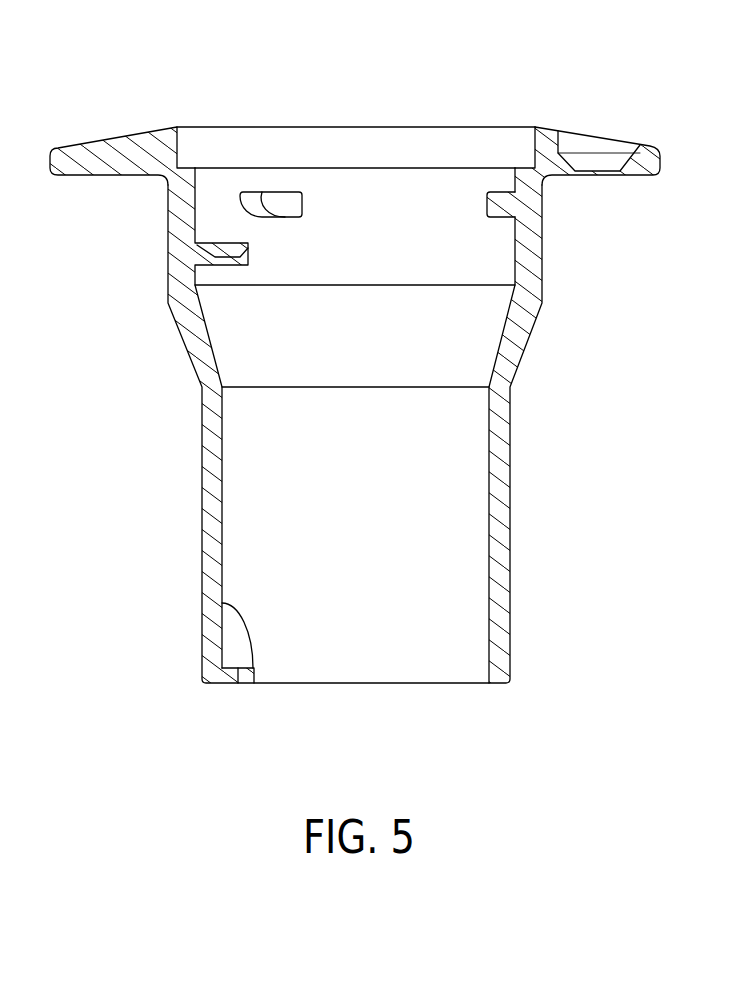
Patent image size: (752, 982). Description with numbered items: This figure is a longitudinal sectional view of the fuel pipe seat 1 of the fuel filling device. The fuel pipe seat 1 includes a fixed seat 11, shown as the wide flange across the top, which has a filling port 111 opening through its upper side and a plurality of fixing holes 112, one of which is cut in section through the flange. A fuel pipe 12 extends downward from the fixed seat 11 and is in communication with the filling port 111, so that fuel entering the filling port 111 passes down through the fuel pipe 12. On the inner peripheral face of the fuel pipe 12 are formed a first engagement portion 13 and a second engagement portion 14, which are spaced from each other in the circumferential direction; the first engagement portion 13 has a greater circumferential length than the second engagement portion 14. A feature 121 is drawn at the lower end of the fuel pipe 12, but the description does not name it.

The fuel pipe seat 1 is at (355, 400).
The fixed seat 11 is at (106, 128).
The filling port 111 is at (361, 166).
The fixing hole 112 is at (597, 160).
The fuel pipe 12 is at (527, 350).
The bottom rim / foot of tubular body 121 is at (232, 676).
The first engagement portion 13 is at (500, 200).
The second engagement portion 14 is at (287, 195).